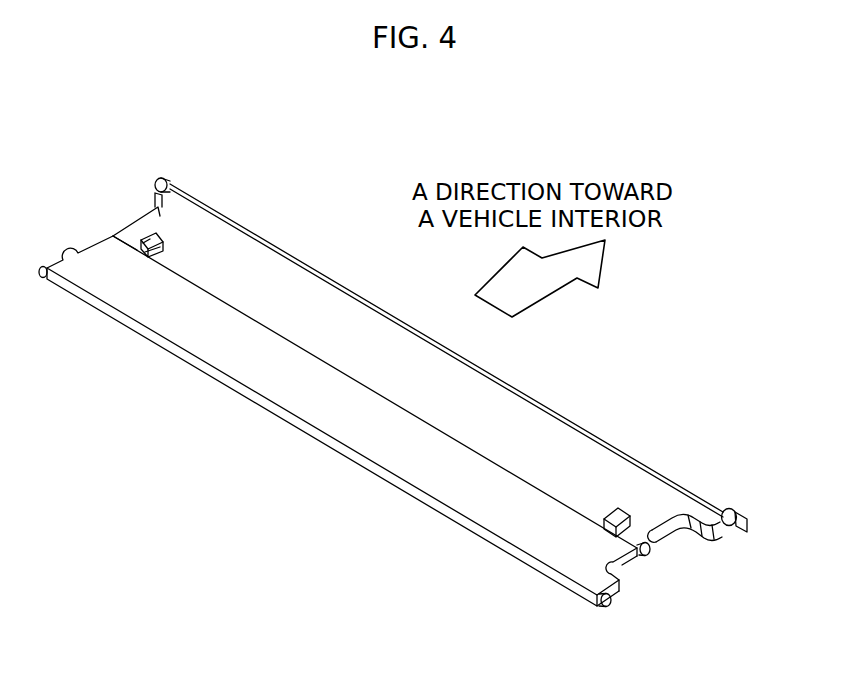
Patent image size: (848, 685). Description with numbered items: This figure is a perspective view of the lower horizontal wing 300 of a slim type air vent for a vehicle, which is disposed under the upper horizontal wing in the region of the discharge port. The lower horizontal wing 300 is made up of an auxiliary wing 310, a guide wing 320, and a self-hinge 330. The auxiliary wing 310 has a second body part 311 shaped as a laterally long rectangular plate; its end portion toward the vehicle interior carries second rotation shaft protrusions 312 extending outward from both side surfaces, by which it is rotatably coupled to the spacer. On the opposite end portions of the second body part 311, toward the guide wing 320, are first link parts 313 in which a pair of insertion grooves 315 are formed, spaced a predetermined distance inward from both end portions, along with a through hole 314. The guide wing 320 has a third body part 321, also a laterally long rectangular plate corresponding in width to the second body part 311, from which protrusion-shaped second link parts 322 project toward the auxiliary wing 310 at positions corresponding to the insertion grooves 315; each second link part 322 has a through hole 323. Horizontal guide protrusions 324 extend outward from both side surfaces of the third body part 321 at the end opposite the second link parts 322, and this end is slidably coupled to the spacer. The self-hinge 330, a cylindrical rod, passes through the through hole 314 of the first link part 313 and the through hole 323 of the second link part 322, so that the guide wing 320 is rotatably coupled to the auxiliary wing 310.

The lower horizontal wing 300 is at (378, 152).
The auxiliary wing 310 is at (616, 428).
The second body part 311 is at (506, 375).
The second rotation shaft protrusions 312 is at (748, 535).
The first link parts 313 is at (132, 238).
The through hole 314 is at (652, 527).
The insertion grooves 315 is at (162, 238).
The guide wing 320 is at (283, 452).
The third body part 321 is at (140, 335).
The second link parts 322 is at (150, 233).
The through hole 323 is at (157, 262).
The horizontal guide protrusions 324 is at (614, 603).
The self-hinge 330 is at (652, 550).